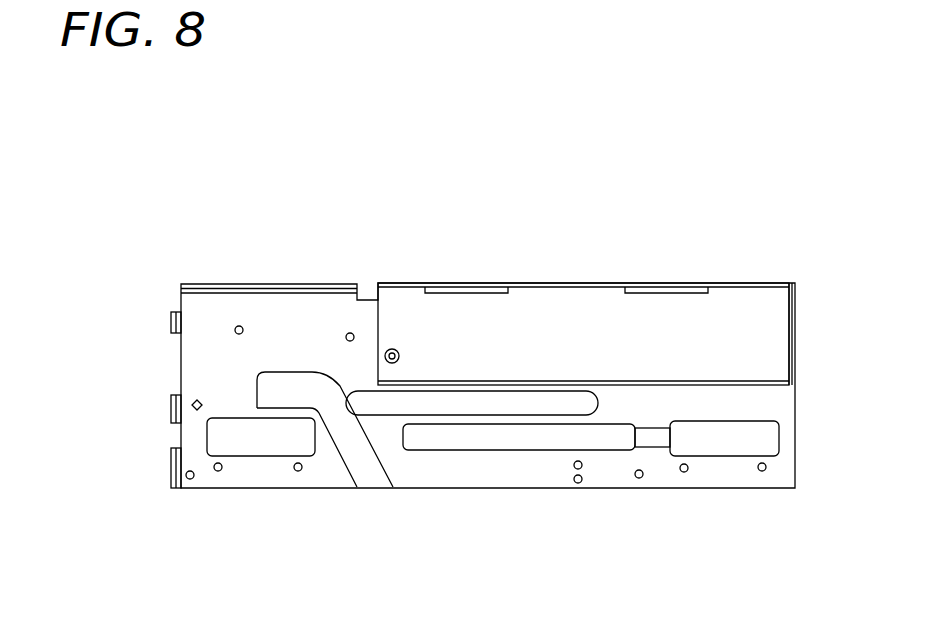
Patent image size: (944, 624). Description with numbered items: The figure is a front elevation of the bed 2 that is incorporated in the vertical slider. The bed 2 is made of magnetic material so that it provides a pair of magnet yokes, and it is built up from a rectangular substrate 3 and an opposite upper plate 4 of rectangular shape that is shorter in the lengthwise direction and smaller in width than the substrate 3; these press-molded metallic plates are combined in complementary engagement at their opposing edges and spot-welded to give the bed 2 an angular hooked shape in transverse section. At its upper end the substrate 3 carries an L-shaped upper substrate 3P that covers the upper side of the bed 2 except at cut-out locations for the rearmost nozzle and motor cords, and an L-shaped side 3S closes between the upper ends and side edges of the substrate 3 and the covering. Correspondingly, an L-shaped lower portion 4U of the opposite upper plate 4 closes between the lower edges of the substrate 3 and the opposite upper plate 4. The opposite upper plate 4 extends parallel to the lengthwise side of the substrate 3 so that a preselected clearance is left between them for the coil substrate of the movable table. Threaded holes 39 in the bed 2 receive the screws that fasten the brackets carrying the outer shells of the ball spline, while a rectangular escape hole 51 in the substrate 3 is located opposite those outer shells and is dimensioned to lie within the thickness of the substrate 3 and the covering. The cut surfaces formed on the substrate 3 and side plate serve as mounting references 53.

The bed 2 is at (234, 276).
The substrate 3 is at (312, 332).
The L-shaped side 3S is at (280, 283).
The L-shaped upper substrate 3P is at (170, 316).
The opposite upper plate 4 is at (571, 333).
The L-shaped lower portion 4U is at (799, 312).
The threaded holes 39 is at (298, 472).
The escape hole 51 is at (246, 440).
The mounting references 53 is at (653, 449).